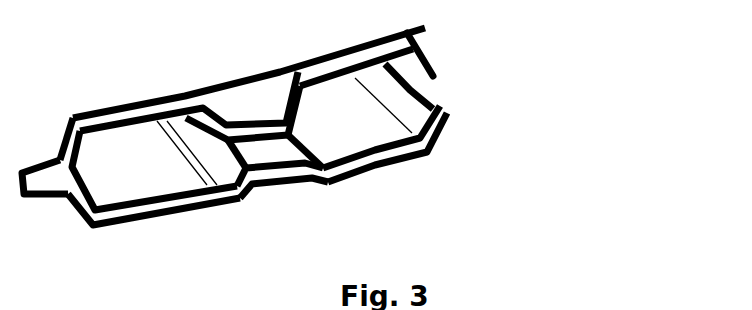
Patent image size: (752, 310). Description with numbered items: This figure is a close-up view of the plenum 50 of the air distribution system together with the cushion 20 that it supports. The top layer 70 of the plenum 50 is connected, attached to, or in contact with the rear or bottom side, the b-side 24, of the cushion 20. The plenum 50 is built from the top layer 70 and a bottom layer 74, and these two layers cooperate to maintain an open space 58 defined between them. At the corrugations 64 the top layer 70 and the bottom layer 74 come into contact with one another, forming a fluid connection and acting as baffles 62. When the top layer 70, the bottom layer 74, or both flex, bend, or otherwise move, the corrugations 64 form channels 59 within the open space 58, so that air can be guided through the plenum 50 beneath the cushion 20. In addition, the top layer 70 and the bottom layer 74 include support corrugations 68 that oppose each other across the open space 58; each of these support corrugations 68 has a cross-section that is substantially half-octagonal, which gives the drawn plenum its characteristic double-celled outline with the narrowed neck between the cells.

The plenum 50 is at (94, 65).
The b-side of the cushion 24 is at (175, 55).
The cushion 20 is at (242, 82).
The open space 58 is at (382, 202).
The channels 59 is at (360, 133).
The support corrugations 68 is at (243, 116).
The baffles 62 is at (351, 191).
The corrugations 64 is at (256, 238).
The bottom layer 74 is at (148, 212).
The top layer 70 is at (420, 43).